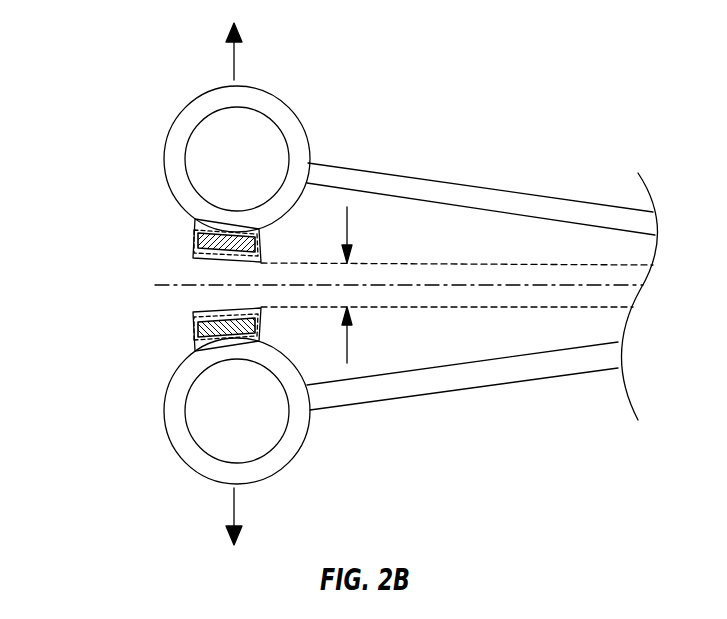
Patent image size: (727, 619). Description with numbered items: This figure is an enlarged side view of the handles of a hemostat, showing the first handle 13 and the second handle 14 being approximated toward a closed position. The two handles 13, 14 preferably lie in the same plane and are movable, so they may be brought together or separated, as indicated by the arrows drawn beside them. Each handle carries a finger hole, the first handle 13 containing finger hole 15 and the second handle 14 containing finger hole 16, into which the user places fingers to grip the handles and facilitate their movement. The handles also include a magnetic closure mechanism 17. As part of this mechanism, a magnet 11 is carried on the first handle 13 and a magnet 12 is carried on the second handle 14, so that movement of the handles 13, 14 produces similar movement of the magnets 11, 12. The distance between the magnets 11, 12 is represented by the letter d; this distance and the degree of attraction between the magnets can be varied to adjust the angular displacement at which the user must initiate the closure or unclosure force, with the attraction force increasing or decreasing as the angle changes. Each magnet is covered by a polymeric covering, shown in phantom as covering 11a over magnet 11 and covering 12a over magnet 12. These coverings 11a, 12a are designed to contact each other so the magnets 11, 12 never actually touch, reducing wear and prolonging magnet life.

The magnet 11 is at (195, 243).
The polymeric covering 11a is at (190, 246).
The magnet 12 is at (195, 325).
The polymeric covering 12a is at (190, 331).
The first handle 13 is at (293, 116).
The second handle 14 is at (285, 465).
The finger hole 15 is at (210, 127).
The finger hole 16 is at (213, 430).
The magnetic closure mechanism 17 is at (96, 255).
The distance between the magnets d is at (358, 287).